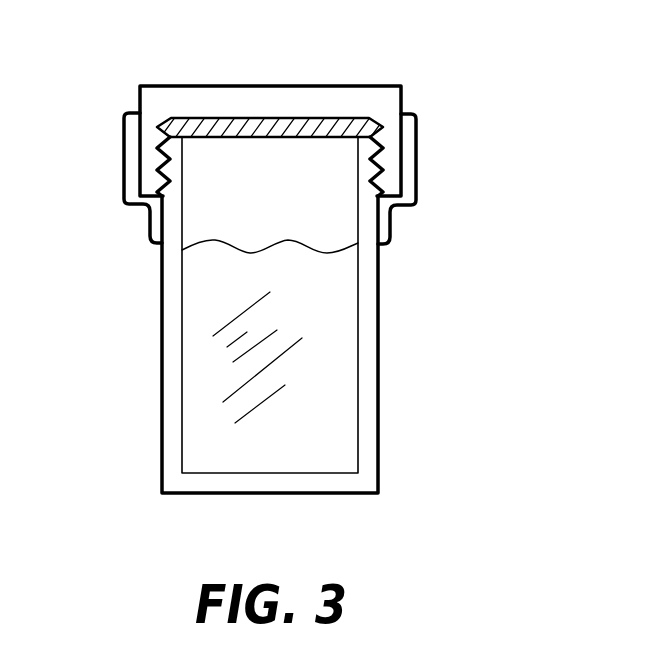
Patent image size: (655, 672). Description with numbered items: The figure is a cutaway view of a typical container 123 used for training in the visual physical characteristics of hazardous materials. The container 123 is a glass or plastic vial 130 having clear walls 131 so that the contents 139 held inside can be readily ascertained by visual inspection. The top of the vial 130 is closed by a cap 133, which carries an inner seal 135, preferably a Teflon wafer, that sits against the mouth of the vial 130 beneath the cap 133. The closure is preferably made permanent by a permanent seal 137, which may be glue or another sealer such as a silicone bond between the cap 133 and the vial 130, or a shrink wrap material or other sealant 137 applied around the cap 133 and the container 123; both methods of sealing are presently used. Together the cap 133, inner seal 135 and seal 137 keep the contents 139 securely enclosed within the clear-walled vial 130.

The container 123 is at (456, 210).
The vial 130 is at (380, 307).
The clear walls 131 is at (368, 378).
The cap 133 is at (343, 85).
The inner seal 135 is at (283, 125).
The permanent seal 137 is at (123, 142).
The contents 139 is at (333, 429).